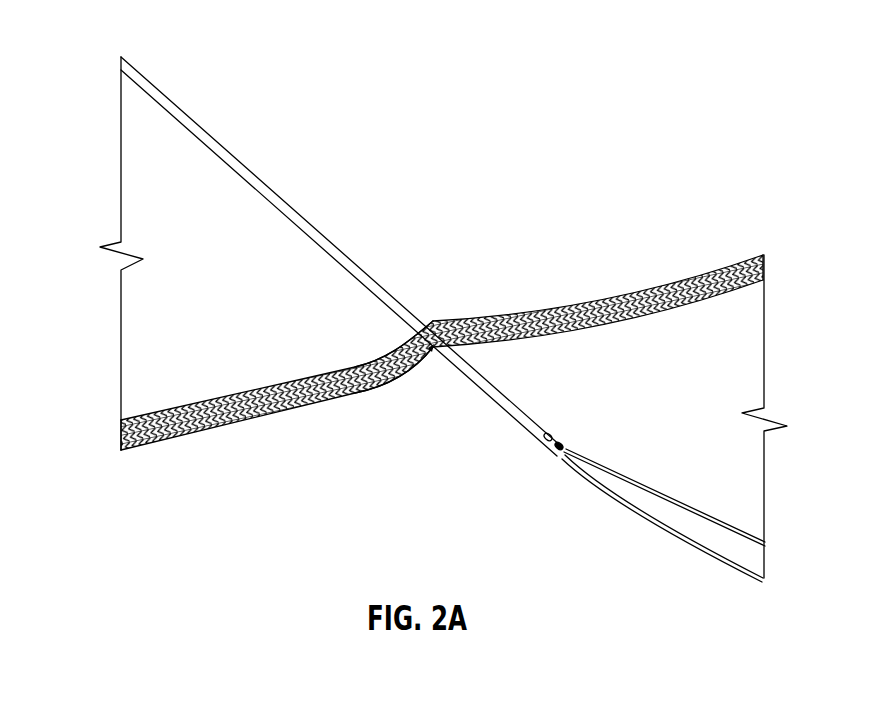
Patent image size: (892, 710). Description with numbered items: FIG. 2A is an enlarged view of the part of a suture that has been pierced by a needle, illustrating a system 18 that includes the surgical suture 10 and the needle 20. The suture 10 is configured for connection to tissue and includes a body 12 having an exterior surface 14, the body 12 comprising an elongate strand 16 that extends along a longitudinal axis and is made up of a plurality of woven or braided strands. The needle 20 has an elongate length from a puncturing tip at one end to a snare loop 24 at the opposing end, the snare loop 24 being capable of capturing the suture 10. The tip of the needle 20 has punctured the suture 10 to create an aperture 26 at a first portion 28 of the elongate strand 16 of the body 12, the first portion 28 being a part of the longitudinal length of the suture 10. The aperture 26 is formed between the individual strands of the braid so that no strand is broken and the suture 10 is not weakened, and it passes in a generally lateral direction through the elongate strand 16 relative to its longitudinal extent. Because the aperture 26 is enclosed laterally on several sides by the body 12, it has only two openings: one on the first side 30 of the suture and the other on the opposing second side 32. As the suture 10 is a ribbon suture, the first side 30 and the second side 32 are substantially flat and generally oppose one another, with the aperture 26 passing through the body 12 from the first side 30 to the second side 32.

The surgical suture 10 is at (250, 358).
The body 12 is at (442, 328).
The exterior surface 14 is at (598, 276).
The elongate strand 16 is at (442, 328).
The system 18 is at (471, 235).
The needle 20 is at (340, 208).
The snare loop 24 is at (637, 510).
The aperture 26 is at (433, 350).
The first portion 28 is at (423, 337).
The first side 30 is at (593, 297).
The second side 32 is at (537, 308).